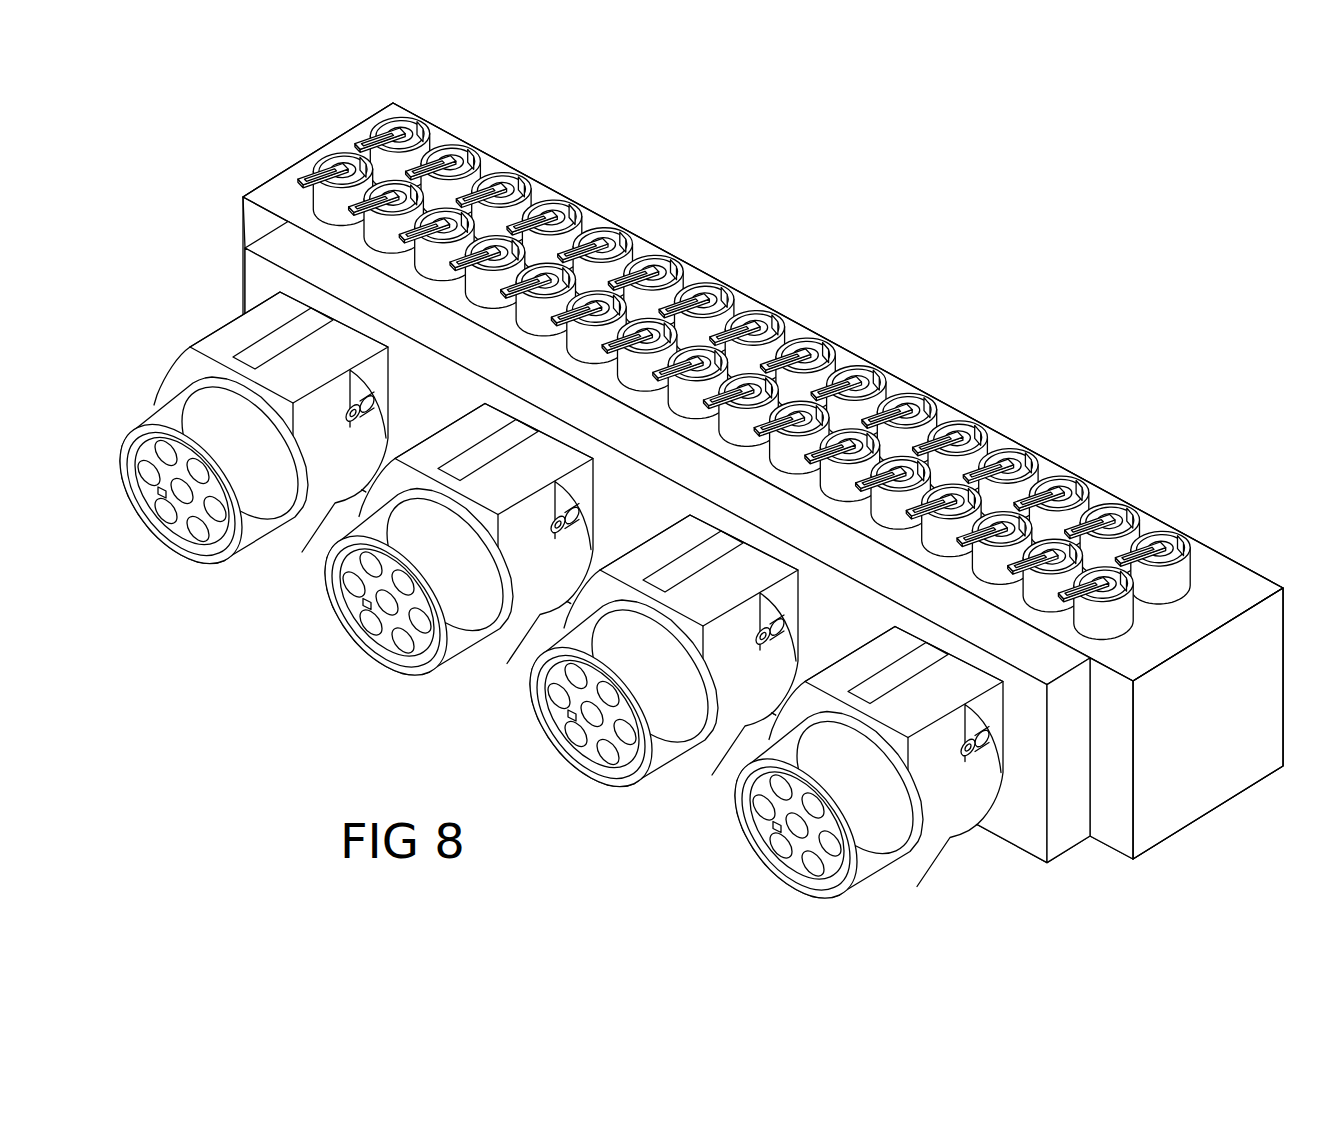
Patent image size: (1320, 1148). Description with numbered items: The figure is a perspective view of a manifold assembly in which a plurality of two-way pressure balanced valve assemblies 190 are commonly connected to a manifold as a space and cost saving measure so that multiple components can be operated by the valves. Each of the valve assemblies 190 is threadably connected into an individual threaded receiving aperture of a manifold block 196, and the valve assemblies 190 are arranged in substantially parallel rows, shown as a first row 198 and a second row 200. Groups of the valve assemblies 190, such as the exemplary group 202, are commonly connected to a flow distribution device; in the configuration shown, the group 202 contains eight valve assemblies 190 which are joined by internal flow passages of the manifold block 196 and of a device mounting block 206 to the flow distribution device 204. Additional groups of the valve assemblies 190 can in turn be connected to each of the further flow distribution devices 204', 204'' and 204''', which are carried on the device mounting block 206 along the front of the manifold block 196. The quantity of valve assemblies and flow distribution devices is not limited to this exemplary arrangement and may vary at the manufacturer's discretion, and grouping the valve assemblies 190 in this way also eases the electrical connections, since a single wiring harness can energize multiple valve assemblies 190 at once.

The valve assemblies 190 is at (683, 264).
The manifold block 196 is at (905, 378).
The first row 198 is at (362, 115).
The second row 200 is at (300, 150).
The group 202 is at (1035, 412).
The flow distribution device 204 is at (869, 780).
The flow distribution device 204' is at (664, 678).
The flow distribution device 204'' is at (454, 567).
The flow distribution device 204''' is at (236, 445).
The device mounting block 206 is at (257, 268).